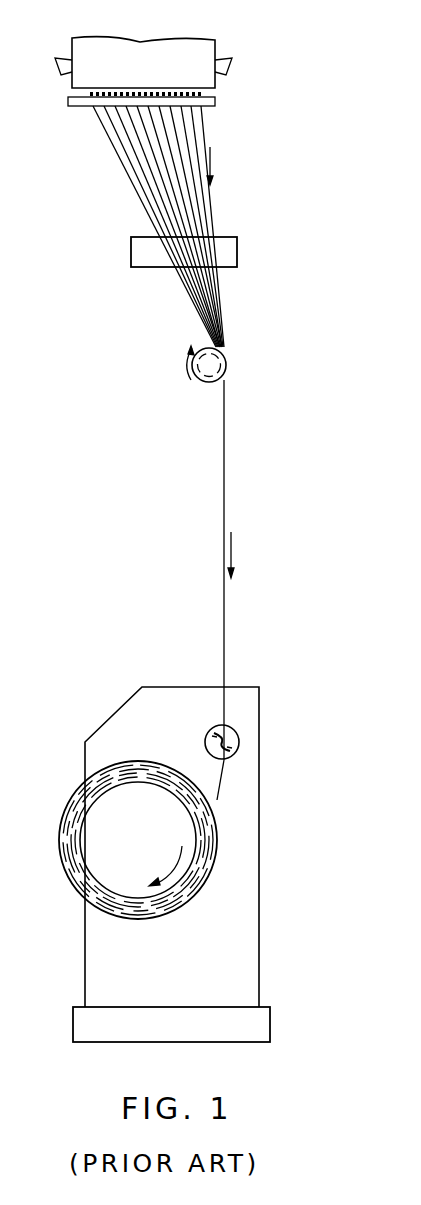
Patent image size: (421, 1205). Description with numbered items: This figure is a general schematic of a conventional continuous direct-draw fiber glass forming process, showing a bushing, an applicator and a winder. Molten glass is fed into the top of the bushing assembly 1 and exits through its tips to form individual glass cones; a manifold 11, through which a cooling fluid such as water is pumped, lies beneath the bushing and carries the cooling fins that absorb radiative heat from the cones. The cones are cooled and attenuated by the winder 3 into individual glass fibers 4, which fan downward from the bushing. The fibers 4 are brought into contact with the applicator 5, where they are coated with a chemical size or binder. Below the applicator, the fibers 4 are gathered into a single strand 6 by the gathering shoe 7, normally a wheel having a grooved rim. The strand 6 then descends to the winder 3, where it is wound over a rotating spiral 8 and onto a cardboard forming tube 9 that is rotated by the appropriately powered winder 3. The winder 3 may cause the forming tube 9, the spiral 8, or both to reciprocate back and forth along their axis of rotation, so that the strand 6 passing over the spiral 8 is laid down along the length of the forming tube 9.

The bushing assembly 1 is at (163, 32).
The manifold 11 is at (80, 108).
The glass fibers 4 is at (144, 176).
The applicator 5 is at (146, 270).
The gathering shoe 7 is at (210, 384).
The strand 6 is at (225, 470).
The winder 3 is at (150, 685).
The rotating spiral 8 is at (239, 741).
The cardboard forming tube 9 is at (92, 812).